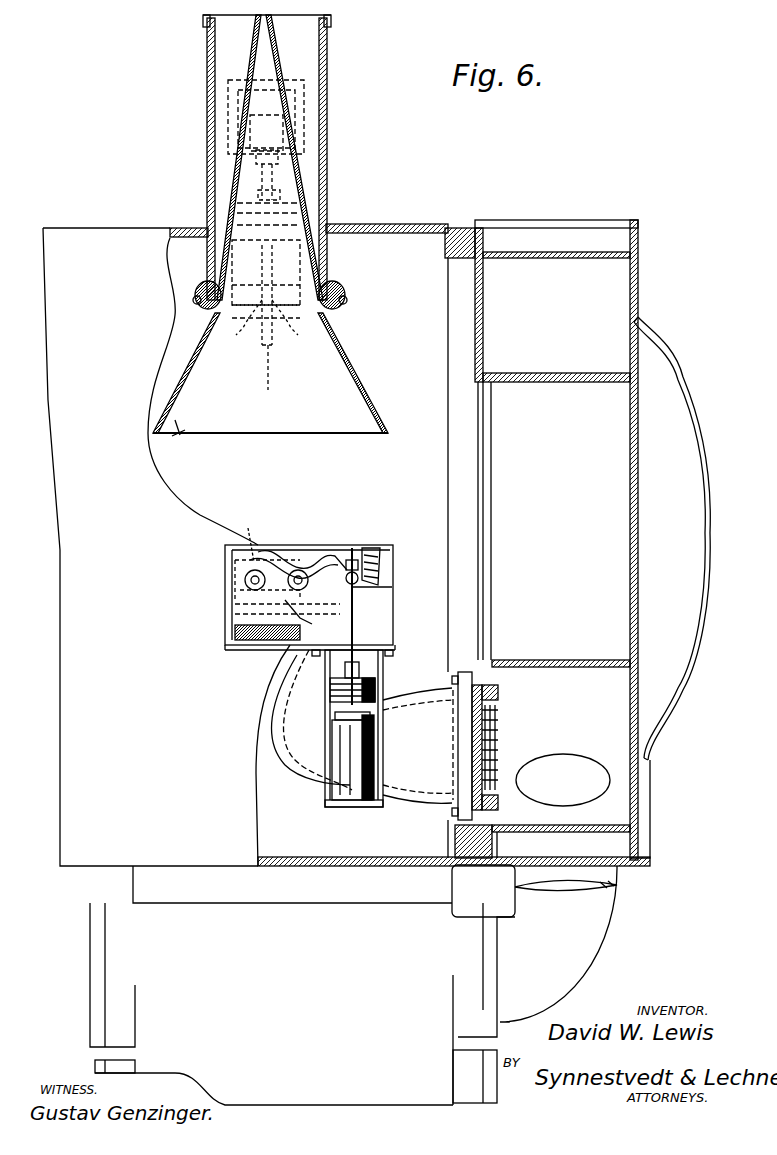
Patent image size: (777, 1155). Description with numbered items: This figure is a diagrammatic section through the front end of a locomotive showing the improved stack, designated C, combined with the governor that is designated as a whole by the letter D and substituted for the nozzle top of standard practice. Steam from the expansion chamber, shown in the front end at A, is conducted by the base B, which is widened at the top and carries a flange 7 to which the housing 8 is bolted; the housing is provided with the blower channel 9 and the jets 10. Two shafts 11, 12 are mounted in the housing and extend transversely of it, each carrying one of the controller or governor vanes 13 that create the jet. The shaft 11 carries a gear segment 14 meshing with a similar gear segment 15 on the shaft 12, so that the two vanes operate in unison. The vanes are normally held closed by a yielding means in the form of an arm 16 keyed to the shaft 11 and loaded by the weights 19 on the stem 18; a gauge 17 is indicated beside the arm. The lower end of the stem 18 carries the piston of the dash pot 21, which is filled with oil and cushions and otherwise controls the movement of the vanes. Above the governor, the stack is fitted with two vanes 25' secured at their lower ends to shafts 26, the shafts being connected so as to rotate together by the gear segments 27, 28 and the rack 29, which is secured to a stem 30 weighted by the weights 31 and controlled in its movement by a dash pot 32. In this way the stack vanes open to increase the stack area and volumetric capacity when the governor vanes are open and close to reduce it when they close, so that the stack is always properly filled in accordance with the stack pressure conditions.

The flange 7 is at (477, 220).
The housing 8 is at (238, 590).
The blower channel 9 is at (233, 560).
The jets 10 is at (245, 535).
The shaft 11 is at (245, 580).
The shaft 12 is at (308, 585).
The controller or governor vanes 13 is at (280, 550).
The gear segment 14 is at (236, 608).
The gear segment 15 is at (309, 619).
The arm 16 is at (352, 560).
The gauge 17 is at (370, 548).
The stem 18 is at (353, 622).
The weights 19 is at (375, 686).
The dash pot 21 is at (340, 762).
The stack vanes 25' is at (265, 157).
The shaft 26 is at (203, 312).
The gear segment 27 is at (243, 332).
The gear segment 28 is at (296, 332).
The rack 29 is at (279, 379).
The stem 30 is at (300, 192).
The weights 31 is at (298, 240).
The dash pot 32 is at (228, 100).
The chamber A is at (563, 756).
The base B is at (418, 745).
The stack C is at (267, 157).
The governor D is at (263, 560).